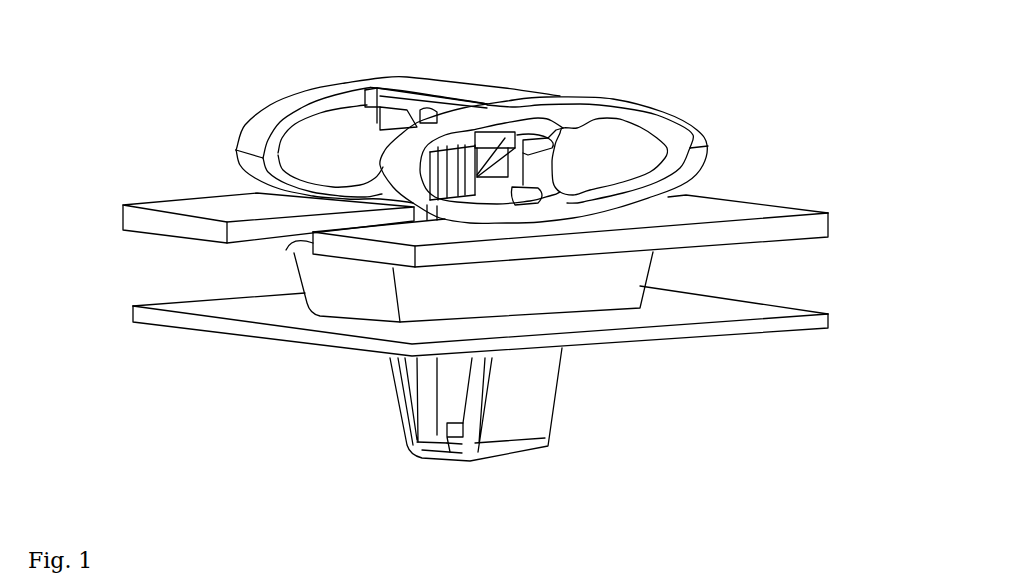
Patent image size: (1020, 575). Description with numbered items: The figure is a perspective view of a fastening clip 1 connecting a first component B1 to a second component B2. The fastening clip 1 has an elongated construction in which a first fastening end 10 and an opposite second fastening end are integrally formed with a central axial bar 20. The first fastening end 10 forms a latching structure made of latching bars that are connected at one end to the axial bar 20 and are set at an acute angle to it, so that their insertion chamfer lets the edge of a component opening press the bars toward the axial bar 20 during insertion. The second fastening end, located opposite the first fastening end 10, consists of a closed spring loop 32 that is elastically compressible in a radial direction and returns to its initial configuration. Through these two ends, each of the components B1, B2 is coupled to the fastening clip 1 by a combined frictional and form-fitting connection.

The fastening clip 1 is at (568, 73).
The closed spring loop 32 is at (658, 115).
The first fastening end 10 is at (535, 398).
The central axial bar 20 is at (428, 393).
The first component B1 is at (710, 328).
The second component B2 is at (822, 232).